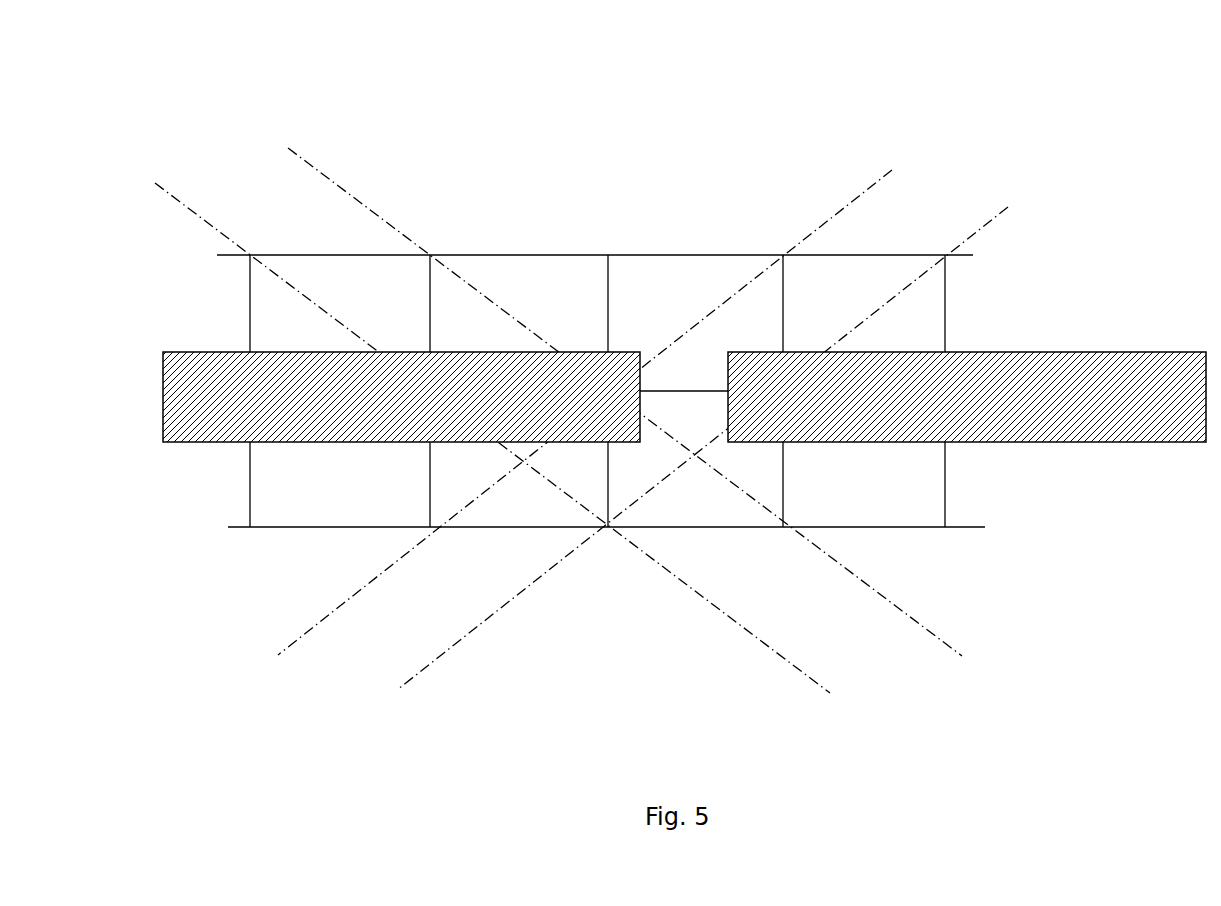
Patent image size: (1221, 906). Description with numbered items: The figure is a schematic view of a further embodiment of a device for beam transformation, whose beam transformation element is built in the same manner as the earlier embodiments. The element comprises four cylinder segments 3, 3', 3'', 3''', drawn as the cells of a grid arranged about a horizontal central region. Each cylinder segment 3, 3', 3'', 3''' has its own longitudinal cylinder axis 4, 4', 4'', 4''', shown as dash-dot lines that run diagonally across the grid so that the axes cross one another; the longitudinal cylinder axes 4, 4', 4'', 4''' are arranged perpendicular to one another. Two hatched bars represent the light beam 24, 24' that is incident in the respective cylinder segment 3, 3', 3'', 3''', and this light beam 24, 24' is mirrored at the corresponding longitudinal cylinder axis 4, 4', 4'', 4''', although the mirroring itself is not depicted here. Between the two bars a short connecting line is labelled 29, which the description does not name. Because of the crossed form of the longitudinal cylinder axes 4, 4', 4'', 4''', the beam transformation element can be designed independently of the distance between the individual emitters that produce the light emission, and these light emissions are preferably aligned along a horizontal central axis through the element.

The cylinder segment 3 is at (606, 453).
The cylinder segment 3' is at (520, 546).
The cylinder segment 3'' is at (595, 254).
The cylinder segment 3''' is at (695, 250).
The longitudinal cylinder axis 4 is at (492, 378).
The longitudinal cylinder axis 4' is at (625, 374).
The longitudinal cylinder axis 4'' is at (585, 408).
The longitudinal cylinder axis 4''' is at (702, 405).
The light beam 24 is at (967, 435).
The light beam 24' is at (346, 438).
The connecting element 29 is at (717, 391).